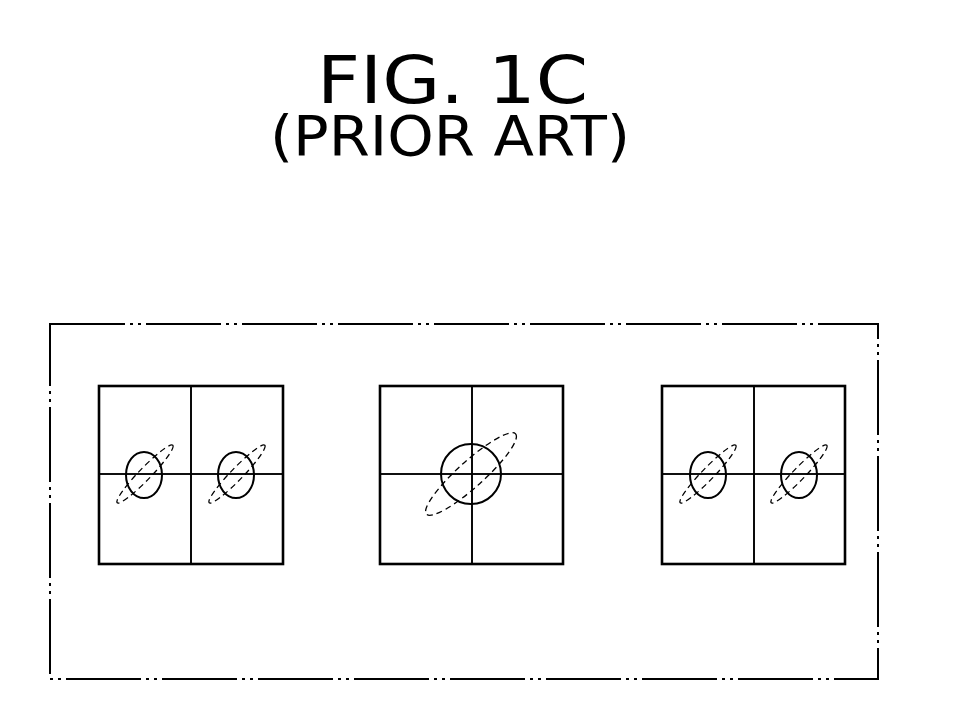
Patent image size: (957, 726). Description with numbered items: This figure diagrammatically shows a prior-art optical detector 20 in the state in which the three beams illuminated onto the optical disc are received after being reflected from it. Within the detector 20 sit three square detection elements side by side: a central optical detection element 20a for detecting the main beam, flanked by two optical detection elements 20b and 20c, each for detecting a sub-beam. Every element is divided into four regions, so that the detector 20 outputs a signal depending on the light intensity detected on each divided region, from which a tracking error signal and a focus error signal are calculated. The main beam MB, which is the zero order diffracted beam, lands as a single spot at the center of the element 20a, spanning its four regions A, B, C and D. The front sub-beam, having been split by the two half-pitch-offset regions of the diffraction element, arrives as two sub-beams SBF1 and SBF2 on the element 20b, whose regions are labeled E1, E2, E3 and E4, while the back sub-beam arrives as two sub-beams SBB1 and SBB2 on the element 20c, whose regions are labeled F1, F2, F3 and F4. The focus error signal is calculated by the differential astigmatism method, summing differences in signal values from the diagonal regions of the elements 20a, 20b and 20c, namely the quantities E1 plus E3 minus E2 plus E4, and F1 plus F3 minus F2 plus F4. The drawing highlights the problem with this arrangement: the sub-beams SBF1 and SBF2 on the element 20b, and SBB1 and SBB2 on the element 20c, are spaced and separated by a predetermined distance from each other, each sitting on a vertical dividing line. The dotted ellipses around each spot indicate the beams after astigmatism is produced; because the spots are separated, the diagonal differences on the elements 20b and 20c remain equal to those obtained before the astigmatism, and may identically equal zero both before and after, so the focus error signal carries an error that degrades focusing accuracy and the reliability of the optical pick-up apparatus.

The optical detector 20 is at (541, 323).
The optical detection element for detecting a main beam 20a is at (442, 565).
The optical detection element for detecting a sub-beam 20b is at (160, 565).
The optical detection element for detecting a sub-beam 20c is at (725, 565).
The main beam MB is at (449, 452).
The sub-beam SBF1 is at (131, 456).
The sub-beam SBF2 is at (223, 456).
The sub-beam SBB1 is at (694, 456).
The sub-beam SBB2 is at (785, 456).
The region of the main-beam optical detection element A is at (447, 430).
The region of the main-beam optical detection element B is at (517, 444).
The region of the main-beam optical detection element C is at (498, 519).
The region of the main-beam optical detection element D is at (426, 505).
The region of the sub-beam optical detection element E1 is at (161, 430).
The region of the sub-beam optical detection element E2 is at (237, 445).
The region of the sub-beam optical detection element E3 is at (221, 519).
The region of the sub-beam optical detection element E4 is at (145, 504).
The region of the sub-beam optical detection element F1 is at (723, 430).
The region of the sub-beam optical detection element F2 is at (799, 445).
The region of the sub-beam optical detection element F3 is at (783, 519).
The region of the sub-beam optical detection element F4 is at (708, 504).